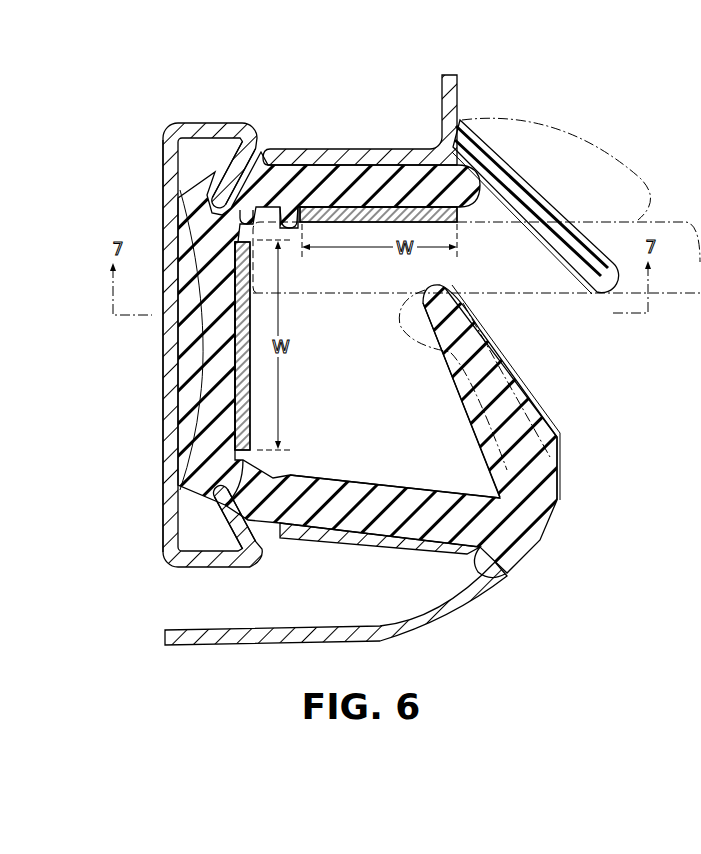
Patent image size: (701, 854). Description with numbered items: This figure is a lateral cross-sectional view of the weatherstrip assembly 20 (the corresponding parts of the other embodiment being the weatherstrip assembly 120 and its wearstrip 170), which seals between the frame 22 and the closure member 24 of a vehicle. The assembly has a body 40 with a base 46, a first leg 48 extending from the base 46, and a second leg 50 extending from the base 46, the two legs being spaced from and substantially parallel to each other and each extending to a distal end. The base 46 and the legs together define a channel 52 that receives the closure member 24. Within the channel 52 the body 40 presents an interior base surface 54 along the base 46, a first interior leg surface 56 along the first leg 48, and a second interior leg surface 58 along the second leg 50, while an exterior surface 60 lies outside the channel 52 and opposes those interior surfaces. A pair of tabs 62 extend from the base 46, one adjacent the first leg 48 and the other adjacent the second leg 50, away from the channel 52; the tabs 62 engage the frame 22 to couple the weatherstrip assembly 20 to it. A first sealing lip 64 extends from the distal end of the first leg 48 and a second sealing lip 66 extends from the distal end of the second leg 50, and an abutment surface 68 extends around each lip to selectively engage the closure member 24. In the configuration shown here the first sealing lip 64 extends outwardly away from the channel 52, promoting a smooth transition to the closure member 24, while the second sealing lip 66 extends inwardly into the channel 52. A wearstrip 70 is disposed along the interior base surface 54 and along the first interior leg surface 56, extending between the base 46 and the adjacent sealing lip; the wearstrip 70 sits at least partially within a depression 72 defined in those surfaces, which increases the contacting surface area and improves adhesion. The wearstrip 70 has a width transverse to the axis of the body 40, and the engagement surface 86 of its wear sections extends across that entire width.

The weatherstrip assembly 20 is at (485, 80).
The weatherstrip assembly 120 is at (375, 101).
The frame 22 is at (178, 128).
The closure member 24 is at (668, 227).
The body 40 is at (190, 282).
The base 46 is at (192, 467).
The first leg 48 is at (318, 177).
The second leg 50 is at (407, 527).
The channel 52 is at (283, 228).
The interior base surface 54 is at (243, 460).
The first interior leg surface 56 is at (321, 301).
The second interior leg surface 58 is at (406, 486).
The exterior surface 60 is at (490, 575).
The tab 62 is at (220, 166).
The first sealing lip 64 is at (540, 140).
The second sealing lip 66 is at (450, 351).
The abutment surface 68 is at (573, 203).
The wearstrip 70 is at (353, 216).
The wearstrip 170 is at (272, 283).
The depression 72 is at (240, 336).
The engagement surface 86 is at (362, 223).